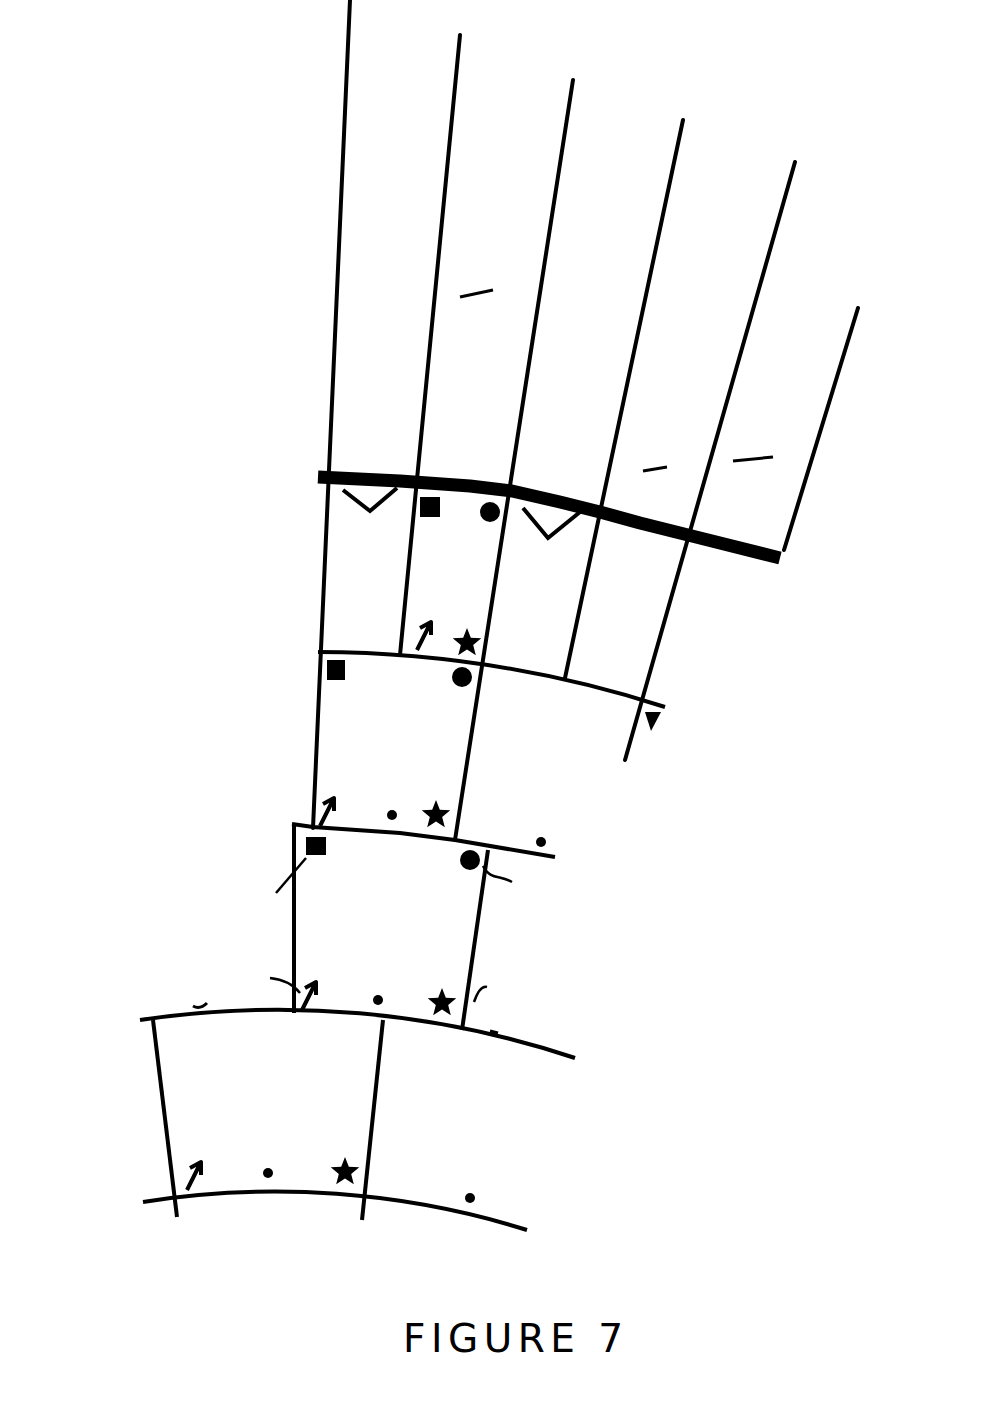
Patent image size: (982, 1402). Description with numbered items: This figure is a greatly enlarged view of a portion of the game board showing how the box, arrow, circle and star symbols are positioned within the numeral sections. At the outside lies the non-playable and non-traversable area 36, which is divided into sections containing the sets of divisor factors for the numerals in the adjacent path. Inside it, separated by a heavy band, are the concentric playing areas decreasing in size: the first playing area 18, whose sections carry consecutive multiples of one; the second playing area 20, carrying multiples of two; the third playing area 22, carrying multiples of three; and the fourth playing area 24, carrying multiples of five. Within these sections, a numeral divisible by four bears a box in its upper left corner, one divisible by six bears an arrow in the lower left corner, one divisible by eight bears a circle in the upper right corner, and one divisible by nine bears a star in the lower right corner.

The non-traversable area 36 is at (607, 30).
The first playing area 18 is at (316, 490).
The second playing area 20 is at (314, 660).
The third playing area 22 is at (288, 834).
The fourth playing area 24 is at (147, 1028).